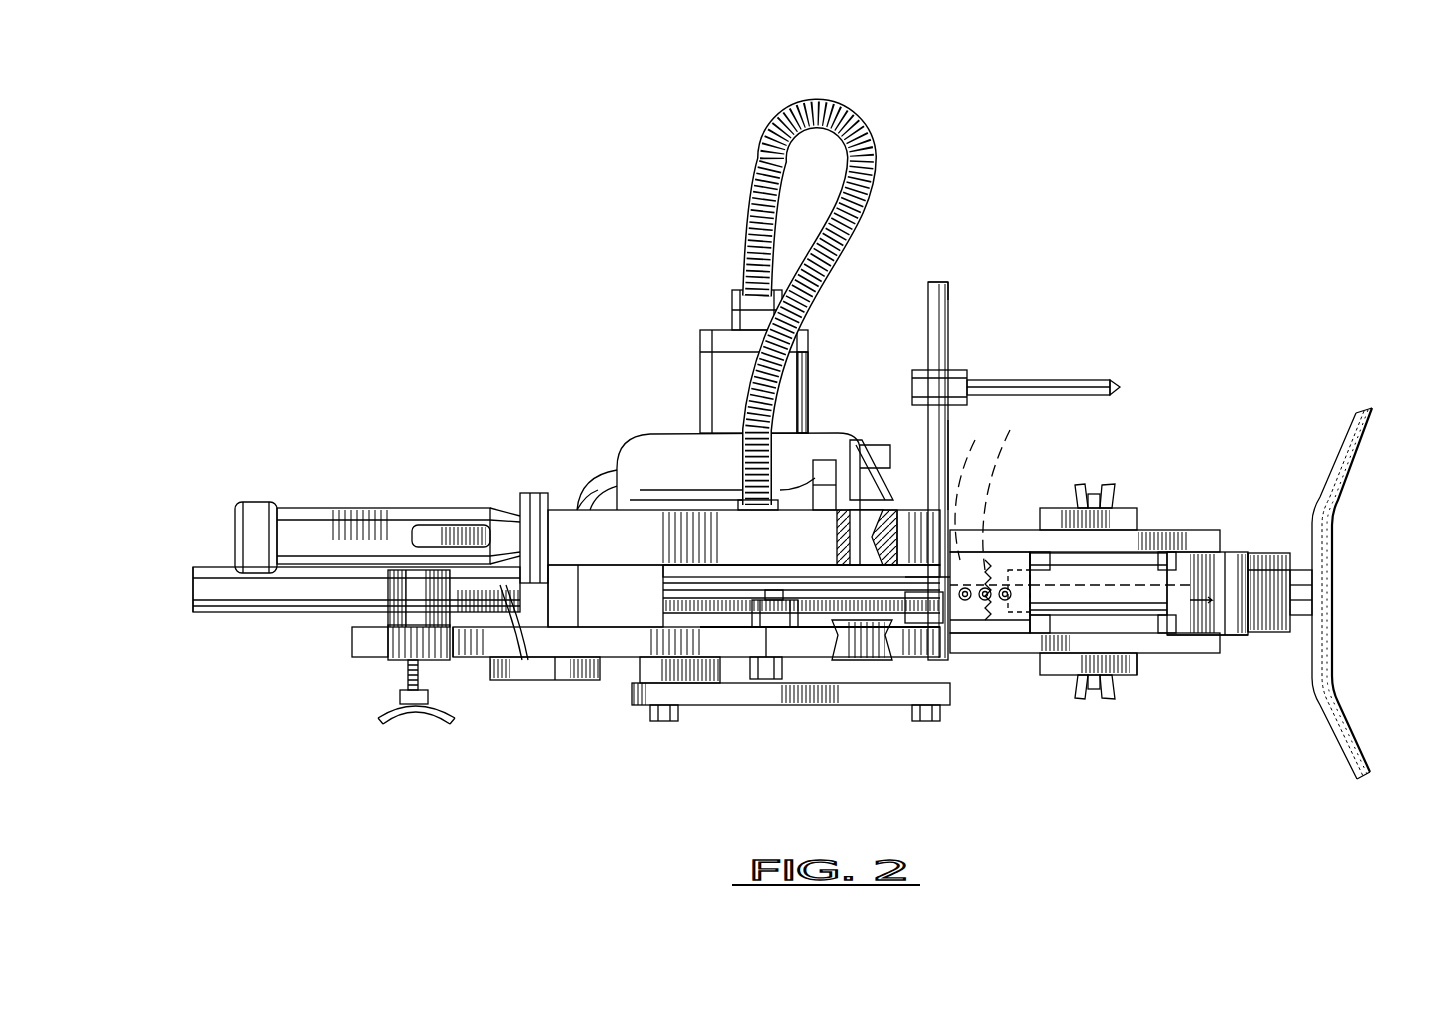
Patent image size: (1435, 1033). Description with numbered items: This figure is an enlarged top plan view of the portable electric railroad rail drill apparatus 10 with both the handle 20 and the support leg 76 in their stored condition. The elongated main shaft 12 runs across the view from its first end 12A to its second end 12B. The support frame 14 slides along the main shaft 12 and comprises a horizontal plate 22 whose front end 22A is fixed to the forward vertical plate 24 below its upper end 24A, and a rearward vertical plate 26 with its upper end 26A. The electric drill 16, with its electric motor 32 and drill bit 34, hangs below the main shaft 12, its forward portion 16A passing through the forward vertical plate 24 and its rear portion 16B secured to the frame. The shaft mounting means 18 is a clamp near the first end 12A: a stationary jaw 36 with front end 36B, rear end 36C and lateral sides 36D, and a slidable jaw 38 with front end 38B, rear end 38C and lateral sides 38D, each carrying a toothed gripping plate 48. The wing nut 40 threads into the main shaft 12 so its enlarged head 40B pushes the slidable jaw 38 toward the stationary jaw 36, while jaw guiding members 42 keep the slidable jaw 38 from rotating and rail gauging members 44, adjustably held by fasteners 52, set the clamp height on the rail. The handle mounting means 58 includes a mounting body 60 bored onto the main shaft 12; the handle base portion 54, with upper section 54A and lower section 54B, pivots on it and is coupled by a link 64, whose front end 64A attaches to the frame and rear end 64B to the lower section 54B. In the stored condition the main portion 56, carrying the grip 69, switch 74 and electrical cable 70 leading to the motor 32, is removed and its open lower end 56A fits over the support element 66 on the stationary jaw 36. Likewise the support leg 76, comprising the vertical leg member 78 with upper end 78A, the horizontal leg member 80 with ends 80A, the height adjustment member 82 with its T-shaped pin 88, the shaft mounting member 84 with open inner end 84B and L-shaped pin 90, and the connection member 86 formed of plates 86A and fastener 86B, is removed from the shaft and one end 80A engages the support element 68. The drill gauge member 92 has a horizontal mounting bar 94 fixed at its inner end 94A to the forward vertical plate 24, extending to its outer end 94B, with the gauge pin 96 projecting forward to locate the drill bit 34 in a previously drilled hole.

The portable electric railroad rail drill apparatus 10 is at (548, 283).
The main shaft 12 is at (265, 622).
The first end of main shaft 12A is at (1170, 578).
The second end of main shaft 12B is at (192, 590).
The support frame 14 is at (822, 552).
The electric drill 16 is at (640, 425).
The forward portion of electric drill 16A is at (995, 452).
The rear portion of electric drill 16B is at (612, 492).
The shaft mounting means (clamp) 18 is at (1122, 706).
The handle 20 is at (300, 500).
The horizontal plate 22 is at (822, 600).
The front end of horizontal plate 22A is at (882, 680).
The forward vertical plate 24 is at (910, 619).
The upper end of forward vertical plate 24A is at (975, 622).
The rearward vertical plate 26 is at (570, 605).
The upper end of rearward vertical plate 26A is at (580, 588).
The electric motor 32 is at (700, 375).
The drill bit 34 is at (1207, 593).
The stationary jaw 36 is at (1005, 558).
The front end of stationary jaw 36B is at (1170, 655).
The rear end of stationary jaw 36C is at (920, 580).
The lateral sides of stationary jaw 36D is at (1003, 522).
The slidable jaw 38 is at (1237, 615).
The front end of slidable jaw 38B is at (1170, 655).
The rear end of slidable jaw 38C is at (1250, 578).
The lateral sides of slidable jaw 38D is at (1236, 552).
The wing nut 40 is at (1333, 598).
The enlarged head of wing nut 40B is at (1305, 612).
The jaw guiding members 42 is at (1165, 540).
The rail gauging members 44 is at (1133, 522).
The gripping plate 48 is at (1038, 552).
The fasteners 52 is at (1106, 486).
The base portion of handle 54 is at (580, 680).
The upper section of handle base portion 54A is at (580, 682).
The lower section of handle base portion 54B is at (715, 690).
The main portion of handle 56 is at (773, 550).
The open lower end of handle main portion 56A is at (877, 498).
The handle mounting means 58 is at (700, 562).
The mounting body 60 is at (588, 615).
The link 64 is at (826, 706).
The front end of link 64A is at (950, 706).
The rear end of link 64B is at (660, 695).
The support element 66 is at (905, 508).
The support element 68 is at (882, 662).
The grip 69 is at (403, 506).
The electrical cable 70 is at (866, 138).
The switch 74 is at (437, 536).
The support leg 76 is at (470, 662).
The vertical leg member 78 is at (357, 660).
The upper end of vertical leg member 78A is at (357, 640).
The horizontal leg member 80 is at (752, 600).
The ends of horizontal leg member 80A is at (583, 651).
The height adjustment member 82 is at (398, 652).
The shaft mounting member 84 is at (410, 585).
The inner end of shaft mounting member 84B is at (400, 568).
The connection member 86 is at (776, 686).
The plates 86A is at (795, 655).
The fastener 86B is at (782, 664).
The T-shaped pin 88 is at (415, 710).
The L-shaped pin 90 is at (518, 665).
The drill gauge member 92 is at (990, 330).
The horizontal mounting bar 94 is at (928, 330).
The inner end of horizontal mounting bar 94A is at (955, 510).
The outer end of horizontal mounting bar 94B is at (940, 282).
The gauge pin 96 is at (1053, 385).